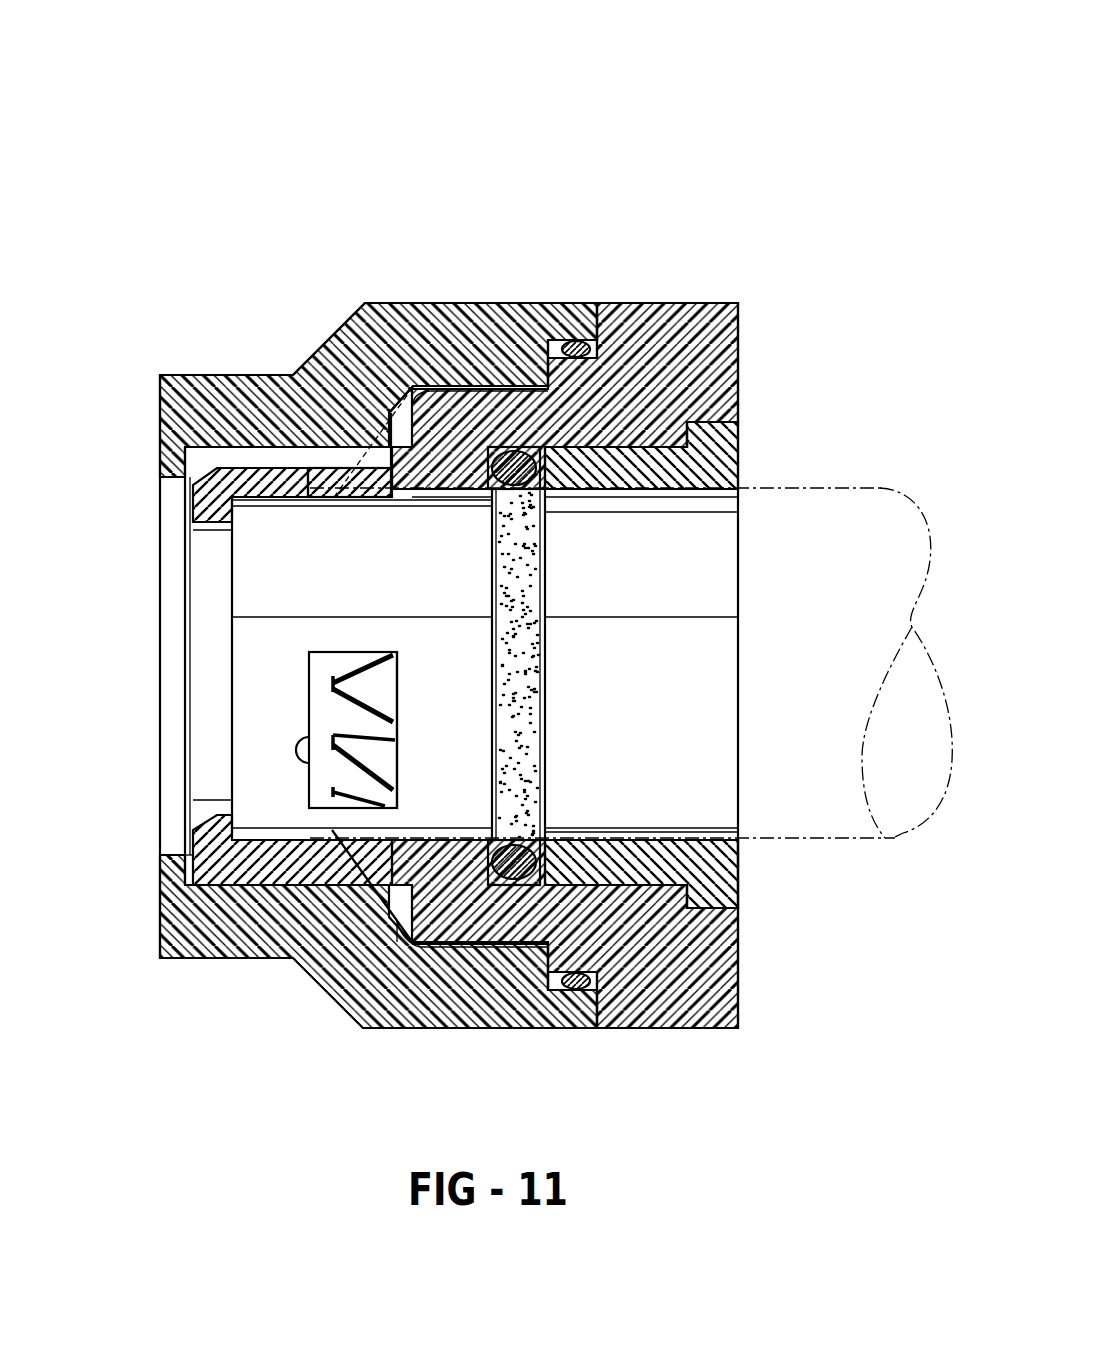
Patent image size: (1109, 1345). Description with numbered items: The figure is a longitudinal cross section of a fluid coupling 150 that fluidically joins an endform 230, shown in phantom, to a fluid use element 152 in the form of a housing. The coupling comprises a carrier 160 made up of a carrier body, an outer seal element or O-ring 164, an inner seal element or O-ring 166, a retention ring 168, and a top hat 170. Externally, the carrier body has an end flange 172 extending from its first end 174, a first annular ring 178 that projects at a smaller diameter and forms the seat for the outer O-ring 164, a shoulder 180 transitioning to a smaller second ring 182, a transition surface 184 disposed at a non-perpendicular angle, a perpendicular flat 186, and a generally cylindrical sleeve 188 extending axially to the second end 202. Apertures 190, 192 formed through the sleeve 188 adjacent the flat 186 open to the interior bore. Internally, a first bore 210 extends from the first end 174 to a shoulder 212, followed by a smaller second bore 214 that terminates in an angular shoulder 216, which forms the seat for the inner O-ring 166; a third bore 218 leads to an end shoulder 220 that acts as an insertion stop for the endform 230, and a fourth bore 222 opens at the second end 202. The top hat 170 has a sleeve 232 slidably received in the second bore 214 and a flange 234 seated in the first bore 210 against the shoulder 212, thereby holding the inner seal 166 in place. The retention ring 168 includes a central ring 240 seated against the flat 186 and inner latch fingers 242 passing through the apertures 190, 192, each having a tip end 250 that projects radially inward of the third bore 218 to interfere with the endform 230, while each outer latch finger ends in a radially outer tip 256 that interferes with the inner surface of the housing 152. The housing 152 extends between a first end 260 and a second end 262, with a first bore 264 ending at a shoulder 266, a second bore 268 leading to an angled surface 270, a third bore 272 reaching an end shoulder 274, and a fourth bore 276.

The fluid coupling 150 is at (573, 118).
The fluid use element 152 is at (428, 262).
The carrier 160 is at (742, 338).
The outer seal element 164 is at (575, 342).
The inner seal element 166 is at (522, 840).
The retention ring 168 is at (380, 757).
The top hat 170 is at (742, 848).
The end flange 172 is at (690, 322).
The first end 174 is at (745, 402).
The first annular ring 178 is at (550, 336).
The shoulder 180 is at (545, 322).
The second ring 182 is at (475, 382).
The transition surface 184 is at (393, 393).
The flat 186 is at (355, 420).
The sleeve 188 is at (270, 402).
The aperture 190 is at (250, 510).
The aperture 192 is at (312, 760).
The second end 202 is at (190, 832).
The first bore 210 is at (742, 448).
The shoulder 212 is at (740, 462).
The second bore 214 is at (630, 492).
The angular shoulder 216 is at (520, 448).
The third bore 218 is at (468, 507).
The end shoulder 220 is at (232, 548).
The fourth bore 222 is at (188, 775).
The endform 230 is at (897, 497).
The sleeve 232 is at (660, 895).
The flange 234 is at (705, 905).
The central ring 240 is at (400, 404).
The inner latch finger 242 is at (332, 515).
The tip end 250 is at (322, 500).
The radially outer tip 256 is at (413, 385).
The first end 260 is at (598, 302).
The second end 262 is at (158, 378).
The first bore 264 is at (572, 992).
The shoulder 266 is at (560, 990).
The second bore 268 is at (480, 950).
The angled surface 270 is at (405, 948).
The third bore 272 is at (242, 885).
The end shoulder 274 is at (215, 882).
The fourth bore 276 is at (188, 842).